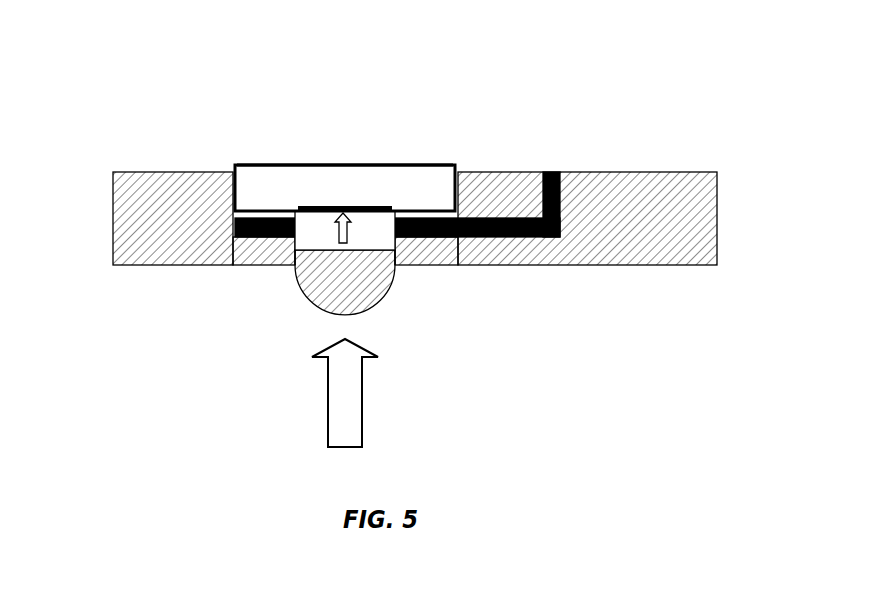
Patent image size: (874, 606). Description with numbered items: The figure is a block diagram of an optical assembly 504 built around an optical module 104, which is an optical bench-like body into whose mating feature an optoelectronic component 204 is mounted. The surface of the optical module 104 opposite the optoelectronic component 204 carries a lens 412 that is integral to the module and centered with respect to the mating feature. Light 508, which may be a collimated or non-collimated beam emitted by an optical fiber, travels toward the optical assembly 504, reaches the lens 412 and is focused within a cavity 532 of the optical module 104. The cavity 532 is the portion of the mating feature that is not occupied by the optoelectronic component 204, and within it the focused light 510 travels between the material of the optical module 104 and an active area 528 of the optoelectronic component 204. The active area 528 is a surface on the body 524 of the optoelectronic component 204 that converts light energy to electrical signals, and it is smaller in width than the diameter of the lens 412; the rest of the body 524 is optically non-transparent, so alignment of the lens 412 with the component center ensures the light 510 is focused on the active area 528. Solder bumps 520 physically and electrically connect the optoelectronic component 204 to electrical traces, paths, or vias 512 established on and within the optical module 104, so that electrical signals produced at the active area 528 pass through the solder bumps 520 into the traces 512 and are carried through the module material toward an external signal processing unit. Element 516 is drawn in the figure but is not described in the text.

The optical module 104 is at (368, 225).
The optoelectronic component 204 is at (232, 163).
The lens 412 is at (370, 308).
The optical assembly 504 is at (800, 143).
The light 508 is at (372, 393).
The focused light 510 is at (348, 226).
The electrical traces, paths, or vias 512 is at (265, 238).
The lens holder / cavity wall 516 is at (303, 260).
The solder bumps 520 is at (237, 212).
The body 524 is at (350, 164).
The active area 528 is at (300, 207).
The cavity 532 is at (377, 219).